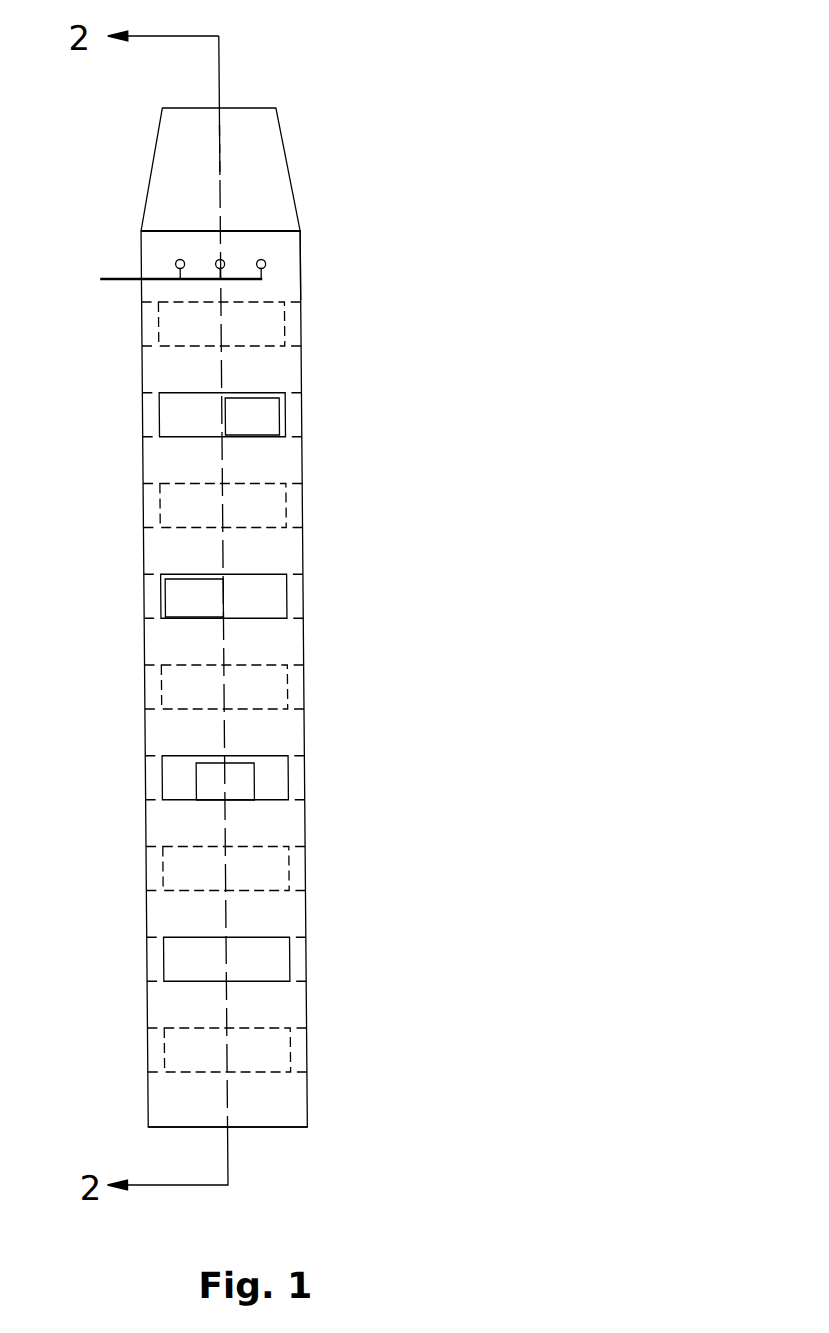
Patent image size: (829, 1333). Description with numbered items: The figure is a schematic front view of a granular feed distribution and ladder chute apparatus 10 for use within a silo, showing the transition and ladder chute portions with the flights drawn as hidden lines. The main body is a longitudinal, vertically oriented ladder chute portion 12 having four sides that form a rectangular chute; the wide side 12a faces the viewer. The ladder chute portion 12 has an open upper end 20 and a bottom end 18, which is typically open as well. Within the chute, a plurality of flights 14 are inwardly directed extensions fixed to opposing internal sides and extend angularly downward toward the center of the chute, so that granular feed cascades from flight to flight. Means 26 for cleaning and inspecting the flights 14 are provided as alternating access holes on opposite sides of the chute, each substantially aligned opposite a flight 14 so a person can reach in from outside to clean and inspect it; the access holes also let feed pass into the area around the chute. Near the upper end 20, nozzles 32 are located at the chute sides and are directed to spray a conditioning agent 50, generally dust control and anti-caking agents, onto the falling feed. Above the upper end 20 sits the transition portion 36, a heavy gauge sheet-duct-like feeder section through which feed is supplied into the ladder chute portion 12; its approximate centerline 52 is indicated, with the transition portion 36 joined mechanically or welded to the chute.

The granular feed distribution and ladder chute apparatus 10 is at (298, 97).
The ladder chute portion 12 is at (298, 478).
The side of ladder chute portion 12a is at (284, 261).
The flights 14 is at (267, 330).
The bottom end 18 is at (268, 1127).
The upper end 20 is at (146, 235).
The means for cleaning and inspecting the flights 26 is at (156, 333).
The nozzles 32 is at (259, 268).
The transition portion 36 is at (285, 162).
The conditioning agent 50 is at (98, 279).
The centerline of transition portion 52 is at (219, 170).